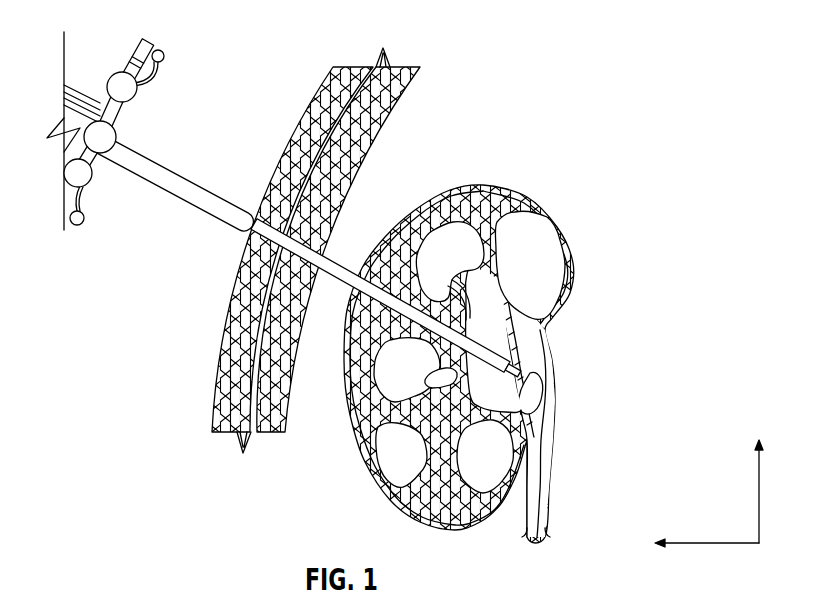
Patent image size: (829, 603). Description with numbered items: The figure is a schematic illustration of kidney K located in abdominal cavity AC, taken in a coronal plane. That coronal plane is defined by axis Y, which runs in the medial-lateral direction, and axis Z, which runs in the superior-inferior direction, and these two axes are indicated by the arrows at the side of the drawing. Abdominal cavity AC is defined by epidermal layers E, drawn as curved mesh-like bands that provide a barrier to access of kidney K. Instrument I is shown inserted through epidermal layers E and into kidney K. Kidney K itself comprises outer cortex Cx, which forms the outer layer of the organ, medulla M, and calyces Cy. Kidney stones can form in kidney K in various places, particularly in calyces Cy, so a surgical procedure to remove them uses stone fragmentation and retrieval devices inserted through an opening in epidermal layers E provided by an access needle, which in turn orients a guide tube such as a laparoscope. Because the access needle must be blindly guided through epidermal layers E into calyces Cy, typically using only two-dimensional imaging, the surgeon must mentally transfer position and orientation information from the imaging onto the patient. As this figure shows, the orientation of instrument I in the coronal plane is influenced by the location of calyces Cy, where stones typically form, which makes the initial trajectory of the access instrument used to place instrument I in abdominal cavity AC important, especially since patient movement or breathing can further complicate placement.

The epidermal layers E is at (290, 147).
The abdominal cavity AC is at (405, 135).
The instrument I is at (340, 268).
The calyces Cy is at (520, 225).
The medulla M is at (537, 277).
The kidney K is at (570, 300).
The outer cortex Cx is at (425, 493).
The axis Z is at (761, 473).
The axis Y is at (694, 541).